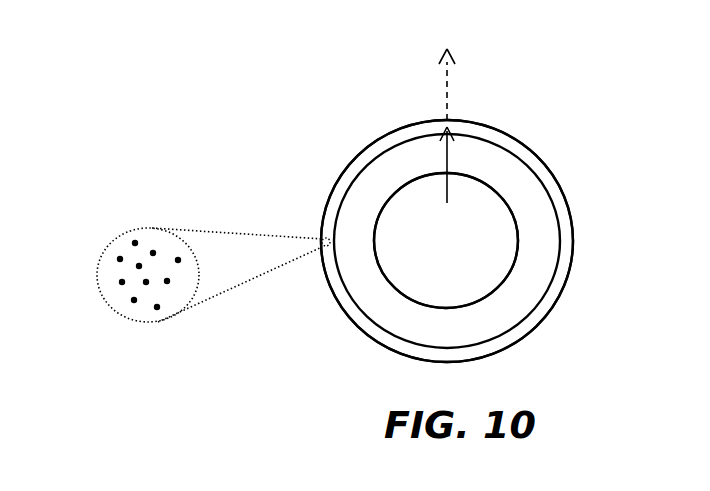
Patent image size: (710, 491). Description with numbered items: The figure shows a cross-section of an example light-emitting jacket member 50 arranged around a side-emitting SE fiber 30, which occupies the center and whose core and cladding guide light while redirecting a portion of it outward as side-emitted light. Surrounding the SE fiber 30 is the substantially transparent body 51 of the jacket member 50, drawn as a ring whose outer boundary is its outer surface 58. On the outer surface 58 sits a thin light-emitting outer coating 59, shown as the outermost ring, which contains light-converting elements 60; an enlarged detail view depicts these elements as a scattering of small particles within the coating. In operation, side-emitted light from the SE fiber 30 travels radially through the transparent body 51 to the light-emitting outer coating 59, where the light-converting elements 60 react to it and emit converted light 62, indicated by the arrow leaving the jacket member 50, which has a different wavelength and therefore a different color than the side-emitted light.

The SE fiber 30 is at (432, 253).
The light-emitting jacket member 50 is at (358, 143).
The body 51 is at (525, 192).
The outer surface 58 is at (480, 137).
The light-emitting outer coating 59 is at (563, 227).
The light-converting elements 60 is at (157, 309).
The converted light 62 is at (447, 88).